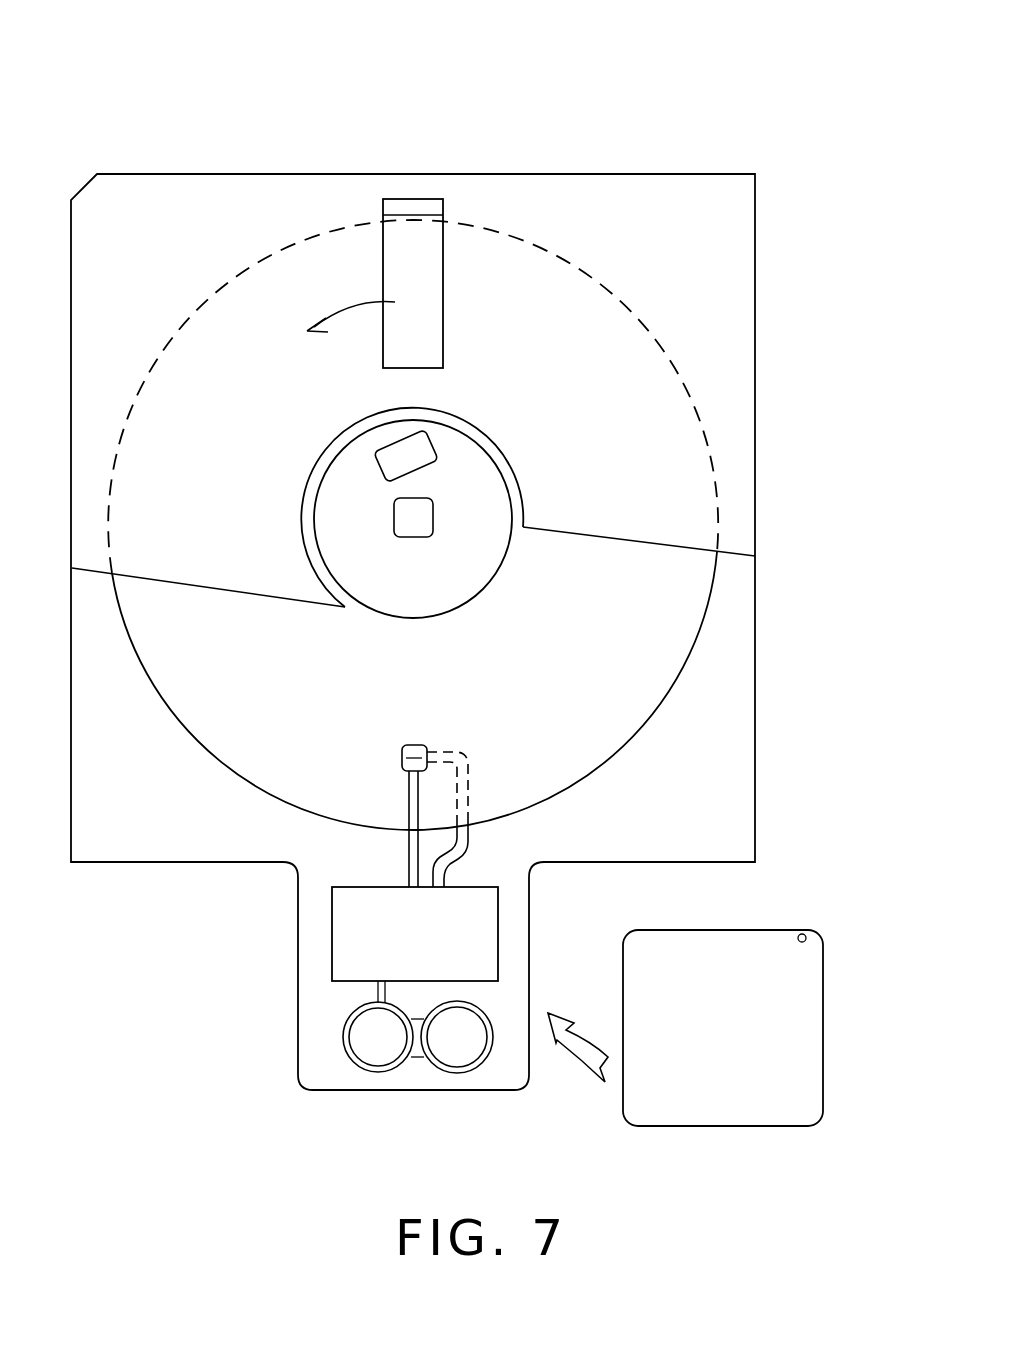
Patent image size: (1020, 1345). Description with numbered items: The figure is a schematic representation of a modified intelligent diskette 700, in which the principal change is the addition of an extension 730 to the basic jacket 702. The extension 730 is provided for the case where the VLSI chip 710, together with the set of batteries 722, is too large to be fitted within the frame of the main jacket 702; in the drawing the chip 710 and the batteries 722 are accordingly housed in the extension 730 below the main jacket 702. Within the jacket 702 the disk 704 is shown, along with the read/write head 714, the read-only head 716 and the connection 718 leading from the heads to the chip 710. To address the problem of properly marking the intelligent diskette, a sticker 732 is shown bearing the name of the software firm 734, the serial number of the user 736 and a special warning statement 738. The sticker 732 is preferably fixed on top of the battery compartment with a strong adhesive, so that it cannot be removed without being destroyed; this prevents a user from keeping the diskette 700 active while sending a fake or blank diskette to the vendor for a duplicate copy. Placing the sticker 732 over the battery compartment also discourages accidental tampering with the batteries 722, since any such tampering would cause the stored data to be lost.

The intelligent diskette 700 is at (412, 81).
The jacket 702 is at (172, 212).
The disk 704 is at (498, 283).
The VLSI chip 710 is at (415, 934).
The R/W head 714 is at (398, 742).
The R/O head 716 is at (410, 738).
The head connection cable 718 is at (466, 764).
The set of batteries 722 is at (363, 1063).
The extension 730 is at (302, 1027).
The sticker 732 is at (763, 1037).
The name of the software firm 734 is at (766, 940).
The serial number of the user 736 is at (768, 1121).
The special warning statement 738 is at (781, 1003).